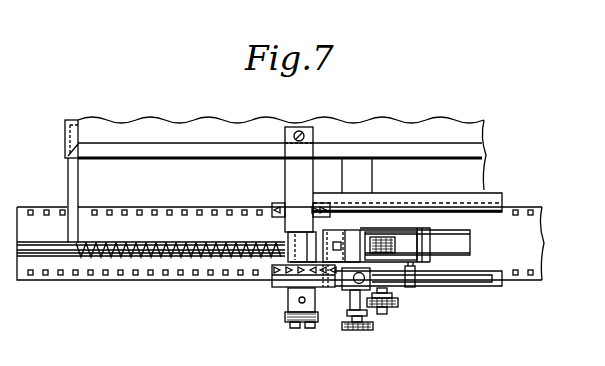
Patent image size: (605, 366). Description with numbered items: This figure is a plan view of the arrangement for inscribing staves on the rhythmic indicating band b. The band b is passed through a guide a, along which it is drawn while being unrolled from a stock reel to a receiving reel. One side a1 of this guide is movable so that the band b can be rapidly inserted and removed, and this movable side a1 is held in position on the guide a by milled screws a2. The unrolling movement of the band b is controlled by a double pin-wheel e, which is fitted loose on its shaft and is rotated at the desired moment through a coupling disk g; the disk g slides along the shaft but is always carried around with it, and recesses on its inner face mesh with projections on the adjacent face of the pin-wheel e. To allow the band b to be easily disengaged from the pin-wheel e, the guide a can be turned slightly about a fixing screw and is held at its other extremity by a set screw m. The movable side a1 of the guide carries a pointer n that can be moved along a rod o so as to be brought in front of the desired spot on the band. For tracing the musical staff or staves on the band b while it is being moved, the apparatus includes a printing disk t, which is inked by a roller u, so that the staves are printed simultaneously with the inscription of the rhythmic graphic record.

The rhythmic indicating band b is at (32, 223).
The double pin-wheel e is at (282, 203).
The guide a is at (420, 197).
The printing disk t is at (394, 246).
The roller u is at (470, 243).
The coupling disk g is at (278, 290).
The rod o is at (470, 279).
The movable side of the guide a1 is at (429, 294).
The pointer n is at (415, 286).
The set screw m is at (347, 330).
The milled screws a2 is at (395, 309).